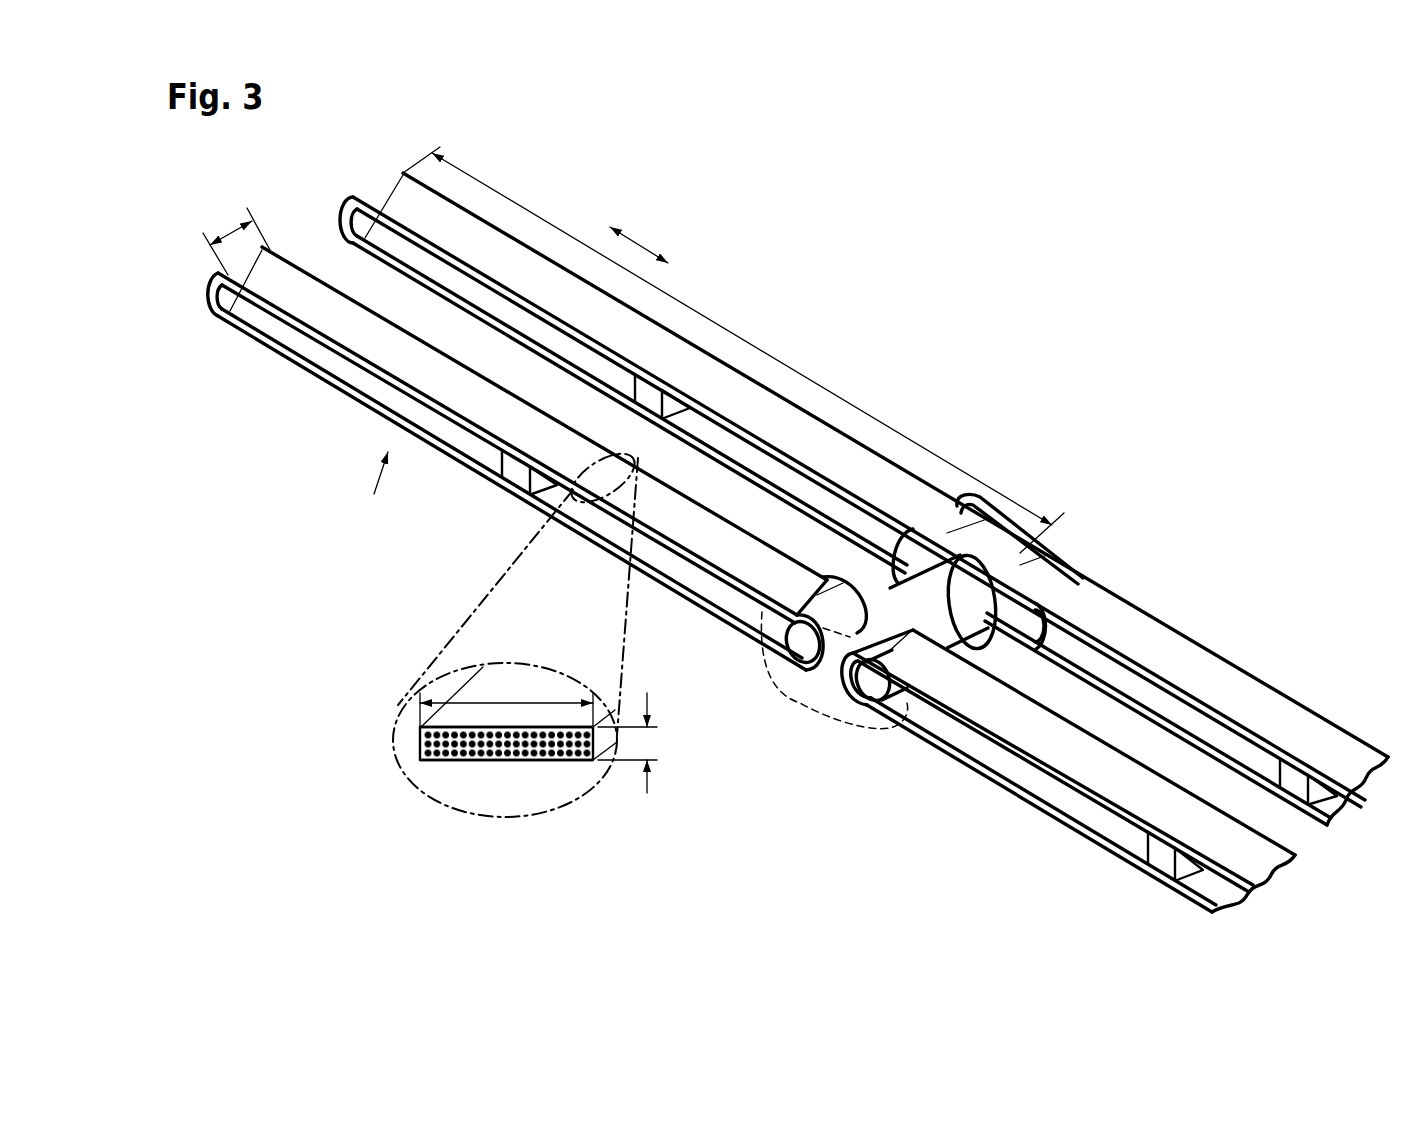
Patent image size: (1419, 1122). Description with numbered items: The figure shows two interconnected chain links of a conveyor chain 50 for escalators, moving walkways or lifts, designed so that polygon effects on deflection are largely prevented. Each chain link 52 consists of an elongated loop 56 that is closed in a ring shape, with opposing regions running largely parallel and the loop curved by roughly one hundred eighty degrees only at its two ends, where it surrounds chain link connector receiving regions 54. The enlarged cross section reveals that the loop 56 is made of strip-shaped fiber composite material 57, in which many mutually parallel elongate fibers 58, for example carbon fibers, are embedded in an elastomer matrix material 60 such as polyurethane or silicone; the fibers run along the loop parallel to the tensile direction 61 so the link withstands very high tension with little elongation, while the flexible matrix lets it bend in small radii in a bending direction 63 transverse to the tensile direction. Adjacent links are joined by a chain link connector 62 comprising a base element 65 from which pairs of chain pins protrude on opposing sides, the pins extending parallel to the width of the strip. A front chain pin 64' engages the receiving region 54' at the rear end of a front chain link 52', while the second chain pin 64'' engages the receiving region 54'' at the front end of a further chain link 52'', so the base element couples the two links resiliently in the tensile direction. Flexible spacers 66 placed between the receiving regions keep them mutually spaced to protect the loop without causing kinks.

The conveyor chain 50 is at (770, 343).
The chain link 52 is at (870, 499).
The front chain link 52' is at (522, 462).
The further chain link 52'' is at (1074, 771).
The chain link connector receiving region 54 is at (265, 259).
The chain link connector receiving region at rear end of front chain link 54' is at (781, 642).
The chain link connector receiving region at front end of further chain link 54'' is at (877, 721).
The loop 56 is at (868, 467).
The fiber composite material 57 is at (458, 715).
The fibers 58 is at (490, 753).
The elastomer matrix material 60 is at (555, 757).
The tensile direction 61 is at (640, 238).
The chain link connector 62 is at (1078, 555).
The bending direction 63 is at (380, 478).
The front chain pin 64' is at (819, 676).
The second chain pin 64'' is at (852, 712).
The base element 65 is at (1040, 617).
The spacer 66 is at (517, 473).